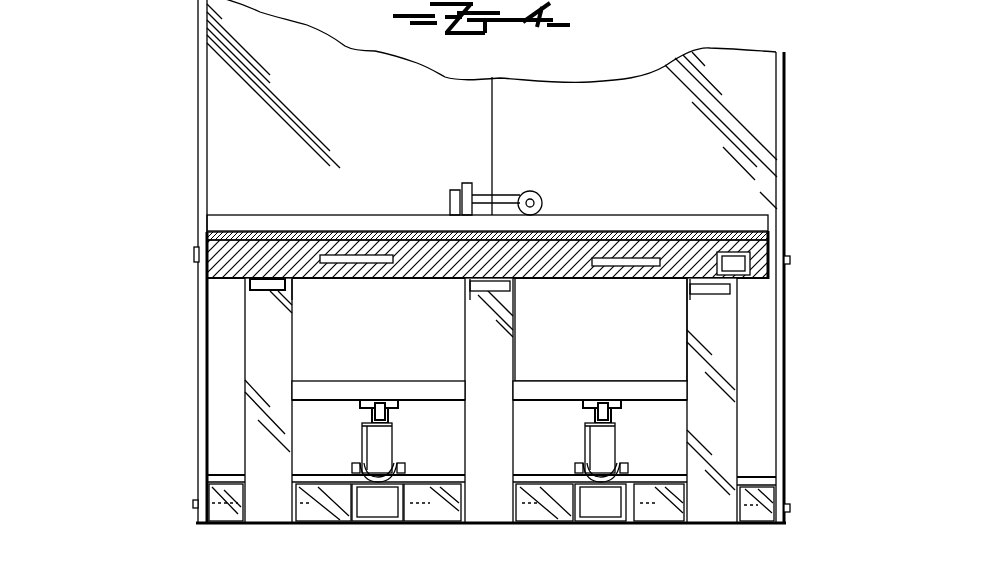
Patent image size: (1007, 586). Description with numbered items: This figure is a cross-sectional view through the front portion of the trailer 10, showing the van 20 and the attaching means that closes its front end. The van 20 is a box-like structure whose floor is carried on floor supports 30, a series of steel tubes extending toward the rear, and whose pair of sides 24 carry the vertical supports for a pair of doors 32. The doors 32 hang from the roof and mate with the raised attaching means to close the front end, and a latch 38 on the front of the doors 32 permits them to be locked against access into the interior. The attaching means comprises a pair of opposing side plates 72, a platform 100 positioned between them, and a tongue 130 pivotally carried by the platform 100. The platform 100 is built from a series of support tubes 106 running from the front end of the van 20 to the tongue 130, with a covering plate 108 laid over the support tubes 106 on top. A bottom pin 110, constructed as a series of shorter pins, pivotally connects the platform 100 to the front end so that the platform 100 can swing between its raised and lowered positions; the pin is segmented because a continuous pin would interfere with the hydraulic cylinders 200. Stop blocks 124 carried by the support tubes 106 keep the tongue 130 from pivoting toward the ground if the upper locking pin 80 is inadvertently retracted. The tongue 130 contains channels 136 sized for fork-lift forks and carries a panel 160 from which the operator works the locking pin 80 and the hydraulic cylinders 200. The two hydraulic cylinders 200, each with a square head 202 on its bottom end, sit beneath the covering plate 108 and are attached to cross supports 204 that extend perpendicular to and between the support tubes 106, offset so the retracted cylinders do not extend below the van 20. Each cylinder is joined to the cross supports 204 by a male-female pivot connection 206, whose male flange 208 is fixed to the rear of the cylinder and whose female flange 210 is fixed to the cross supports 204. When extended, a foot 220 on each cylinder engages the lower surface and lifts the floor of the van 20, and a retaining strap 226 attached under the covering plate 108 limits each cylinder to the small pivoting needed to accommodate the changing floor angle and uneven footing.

The trailer 10 is at (168, 88).
The van 20 is at (640, 74).
The sides 24 is at (198, 38).
The floor supports 30 is at (220, 521).
The doors 32 is at (446, 86).
The latch 38 is at (548, 187).
The side plates 72 is at (197, 385).
The upper locking pin 80 is at (194, 257).
The platform 100 is at (236, 315).
The support tubes 106 is at (270, 507).
The covering plate 108 is at (638, 337).
The bottom pin 110 is at (193, 505).
The stop blocks 124 is at (295, 291).
The tongue 130 is at (300, 223).
The channels 136 is at (360, 254).
The panel 160 is at (756, 268).
The hydraulic cylinders 200 is at (362, 448).
The square head 202 is at (382, 500).
The cross supports 204 is at (327, 390).
The male-female pivot connection 206 is at (352, 410).
The male flange 208 is at (393, 440).
The female flange 210 is at (391, 414).
The foot 220 is at (378, 523).
The retaining strap 226 is at (355, 472).